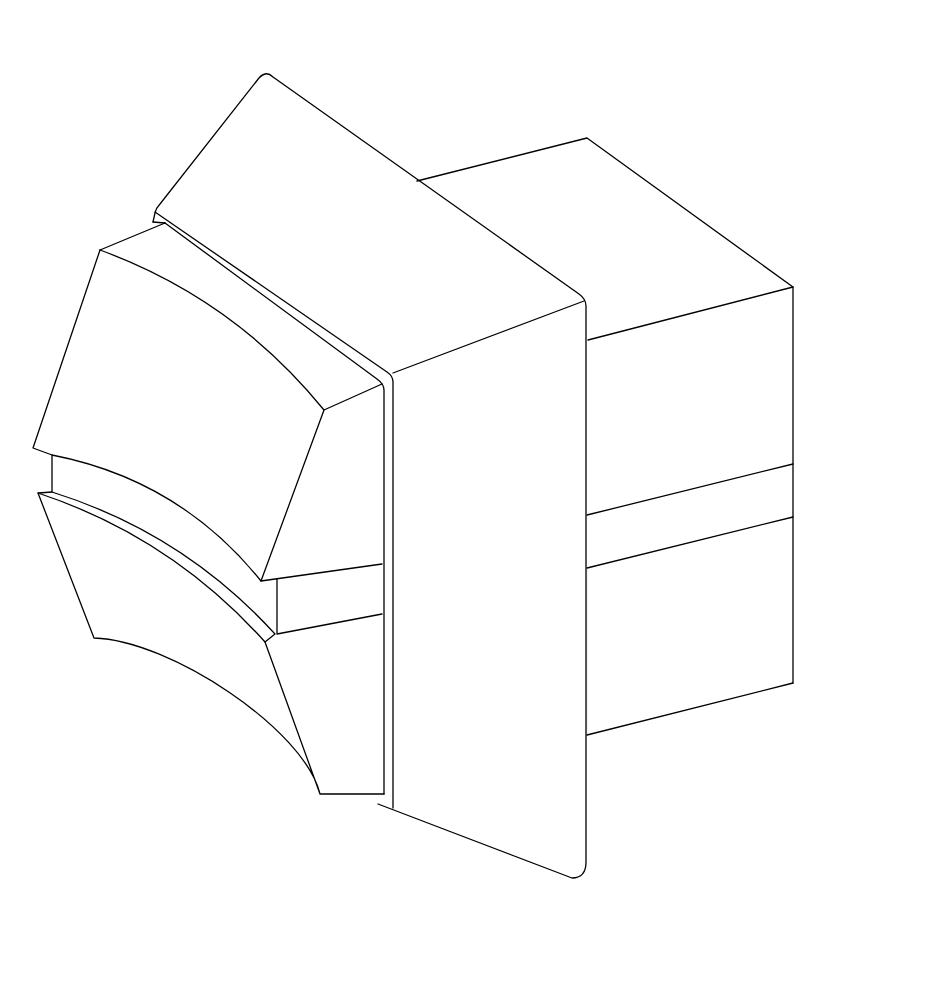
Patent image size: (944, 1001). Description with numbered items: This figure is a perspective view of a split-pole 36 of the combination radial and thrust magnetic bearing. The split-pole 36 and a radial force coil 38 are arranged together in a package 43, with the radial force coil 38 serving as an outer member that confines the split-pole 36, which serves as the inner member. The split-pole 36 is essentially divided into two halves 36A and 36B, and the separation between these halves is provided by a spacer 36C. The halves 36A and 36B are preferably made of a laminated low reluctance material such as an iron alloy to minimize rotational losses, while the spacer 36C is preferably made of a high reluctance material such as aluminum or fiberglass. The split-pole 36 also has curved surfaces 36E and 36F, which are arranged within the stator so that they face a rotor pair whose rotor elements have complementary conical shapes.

The package 43 is at (588, 87).
The radial force coil 38 is at (265, 181).
The split-pole 36 is at (674, 221).
The half of the split-pole 36A is at (749, 394).
The half of the split-pole 36B is at (749, 609).
The spacer 36C is at (749, 499).
The curved surface 36E is at (117, 388).
The curved surface 36F is at (166, 650).